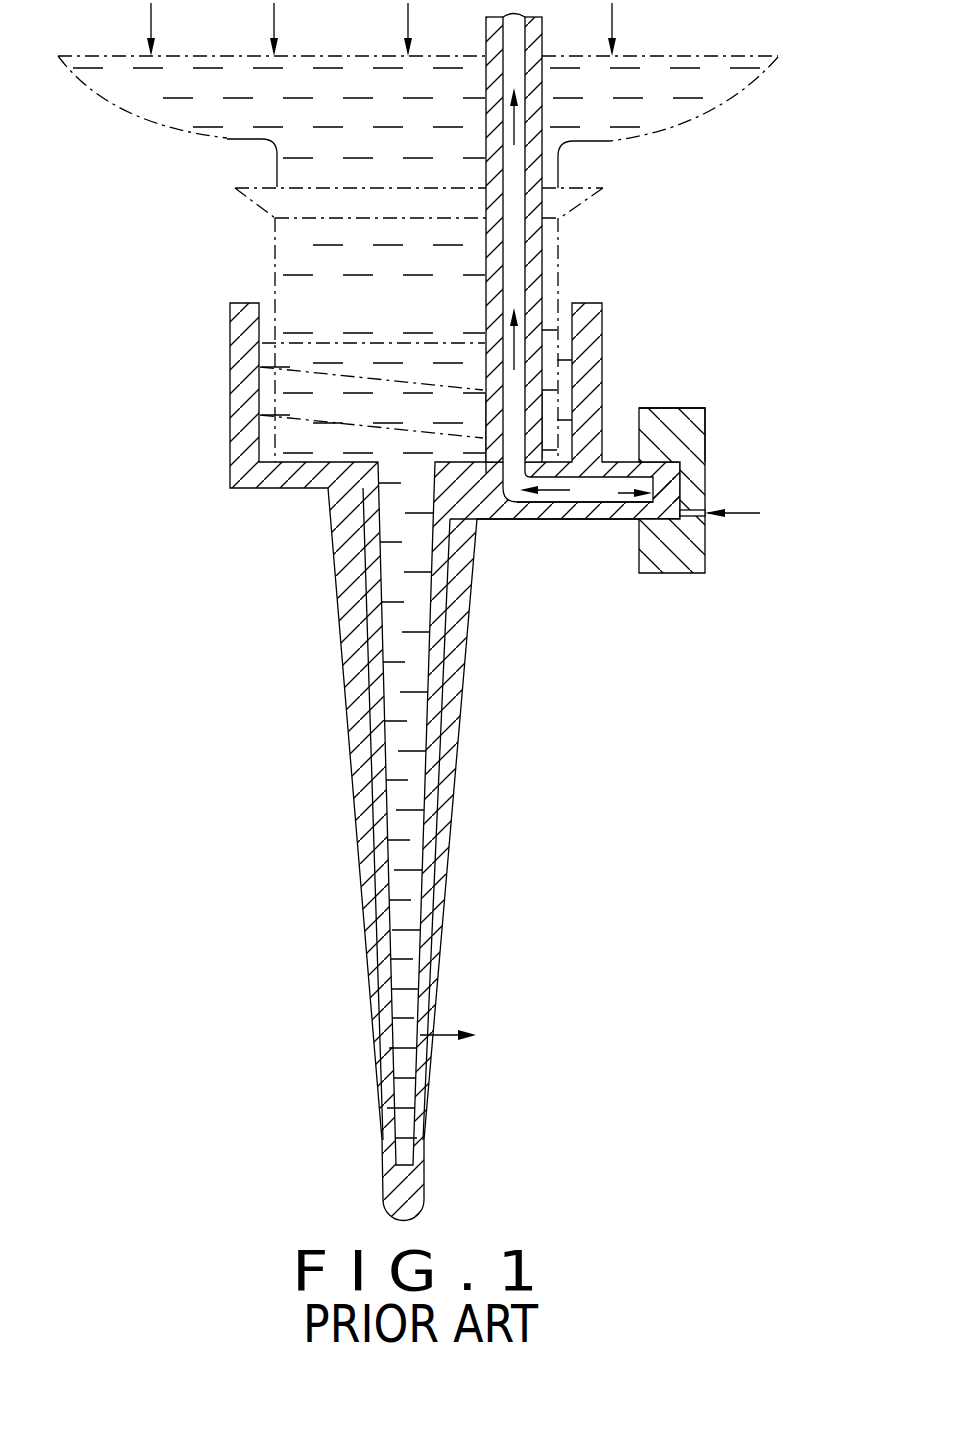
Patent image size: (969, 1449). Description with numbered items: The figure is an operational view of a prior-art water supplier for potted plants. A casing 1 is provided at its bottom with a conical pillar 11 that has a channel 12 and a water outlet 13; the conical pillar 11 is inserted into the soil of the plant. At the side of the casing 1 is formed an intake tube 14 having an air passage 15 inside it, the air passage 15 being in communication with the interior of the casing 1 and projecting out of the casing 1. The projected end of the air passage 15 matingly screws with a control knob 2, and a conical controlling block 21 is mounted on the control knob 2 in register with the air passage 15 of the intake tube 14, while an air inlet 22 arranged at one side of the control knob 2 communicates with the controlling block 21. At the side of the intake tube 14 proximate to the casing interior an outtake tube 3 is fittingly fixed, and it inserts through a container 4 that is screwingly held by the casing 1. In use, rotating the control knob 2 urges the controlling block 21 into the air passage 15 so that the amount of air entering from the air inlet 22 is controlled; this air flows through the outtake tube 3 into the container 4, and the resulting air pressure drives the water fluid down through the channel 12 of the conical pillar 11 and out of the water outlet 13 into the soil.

The casing 1 is at (246, 374).
The control knob 2 is at (674, 573).
The outtake tube 3 is at (533, 258).
The container 4 is at (150, 120).
The conical pillar 11 is at (362, 740).
The channel 12 is at (407, 795).
The water outlet 13 is at (420, 1043).
The intake tube 14 is at (580, 512).
The air passage 15 is at (518, 490).
The controlling block 21 is at (667, 408).
The air inlet 22 is at (685, 520).